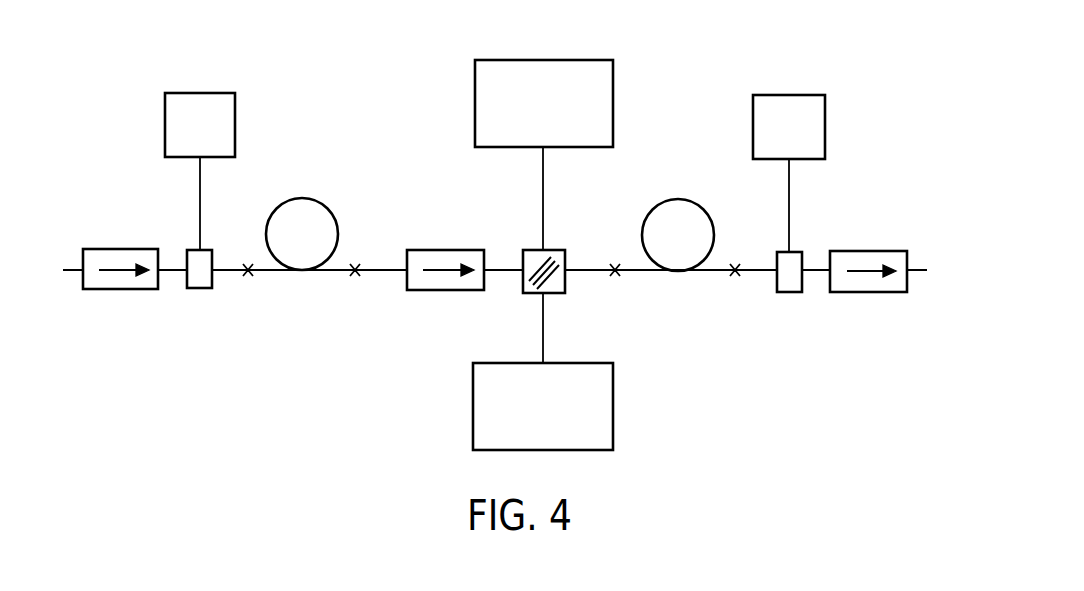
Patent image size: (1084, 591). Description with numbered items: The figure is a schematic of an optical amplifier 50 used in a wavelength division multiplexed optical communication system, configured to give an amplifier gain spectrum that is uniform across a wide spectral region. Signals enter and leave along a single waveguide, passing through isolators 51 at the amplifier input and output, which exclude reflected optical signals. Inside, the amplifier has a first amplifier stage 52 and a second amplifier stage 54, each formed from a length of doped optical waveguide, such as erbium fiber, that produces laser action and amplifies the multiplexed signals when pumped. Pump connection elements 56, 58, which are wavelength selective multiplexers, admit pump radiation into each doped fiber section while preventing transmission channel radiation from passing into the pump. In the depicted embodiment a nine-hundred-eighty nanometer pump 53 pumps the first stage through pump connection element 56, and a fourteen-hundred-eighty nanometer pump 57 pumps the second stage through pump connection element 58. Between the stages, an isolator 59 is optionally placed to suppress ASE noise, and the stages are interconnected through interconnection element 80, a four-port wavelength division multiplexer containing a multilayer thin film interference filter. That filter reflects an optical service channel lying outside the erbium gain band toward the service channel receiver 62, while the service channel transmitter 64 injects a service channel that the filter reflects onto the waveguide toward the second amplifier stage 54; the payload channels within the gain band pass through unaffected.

The optical amplifier 50 is at (262, 373).
The isolators 51 is at (122, 249).
The first amplifier stage 52 is at (312, 199).
The 980 nm pump 53 is at (187, 93).
The second amplifier stage 54 is at (670, 200).
The pump connection element 56 is at (205, 288).
The 1480 nm pump 57 is at (788, 95).
The pump connection element 58 is at (792, 292).
The isolator 59 is at (433, 250).
The service channel receiver 62 is at (560, 60).
The service channel transmitter 64 is at (583, 363).
The interconnection element 80 is at (558, 250).